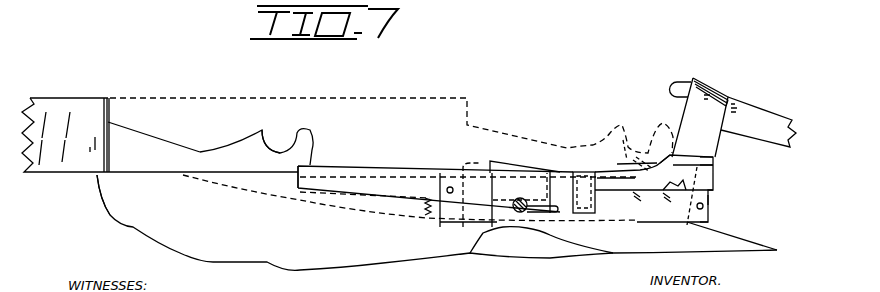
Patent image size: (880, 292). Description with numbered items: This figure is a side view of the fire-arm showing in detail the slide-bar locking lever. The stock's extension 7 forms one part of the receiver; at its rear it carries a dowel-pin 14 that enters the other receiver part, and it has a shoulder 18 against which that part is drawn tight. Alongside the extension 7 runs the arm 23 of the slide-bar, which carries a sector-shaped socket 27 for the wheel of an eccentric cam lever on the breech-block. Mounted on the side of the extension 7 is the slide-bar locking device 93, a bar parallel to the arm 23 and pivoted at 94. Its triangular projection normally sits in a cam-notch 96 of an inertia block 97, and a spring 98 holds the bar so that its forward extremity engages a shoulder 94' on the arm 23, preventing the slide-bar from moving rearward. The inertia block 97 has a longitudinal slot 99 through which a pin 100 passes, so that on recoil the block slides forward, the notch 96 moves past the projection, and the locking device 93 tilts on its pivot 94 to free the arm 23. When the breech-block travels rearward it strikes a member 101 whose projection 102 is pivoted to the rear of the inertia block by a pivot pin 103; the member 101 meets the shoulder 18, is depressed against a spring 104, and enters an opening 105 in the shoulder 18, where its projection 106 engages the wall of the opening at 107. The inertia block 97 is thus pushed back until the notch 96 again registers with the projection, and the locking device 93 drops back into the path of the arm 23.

The extension 7 is at (703, 83).
The dowel-pin 14 is at (677, 78).
The shoulder 18 is at (693, 117).
The arm 23 is at (140, 150).
The sector-shaped socket 27 is at (292, 152).
The slide-bar locking device 93 is at (367, 183).
The pivot 94 is at (437, 214).
The shoulder 94' is at (256, 197).
The cam-notch 96 is at (585, 178).
The inertia block 97 is at (622, 202).
The spring 98 is at (425, 205).
The longitudinal slot 99 is at (500, 213).
The pin 100 is at (522, 213).
The member 101 is at (713, 165).
The projection 102 is at (712, 198).
The pivot pin 103 is at (708, 213).
The spring 104 is at (674, 194).
The opening 105 is at (713, 153).
The projection 106 is at (670, 155).
The engagement point 107 is at (675, 152).